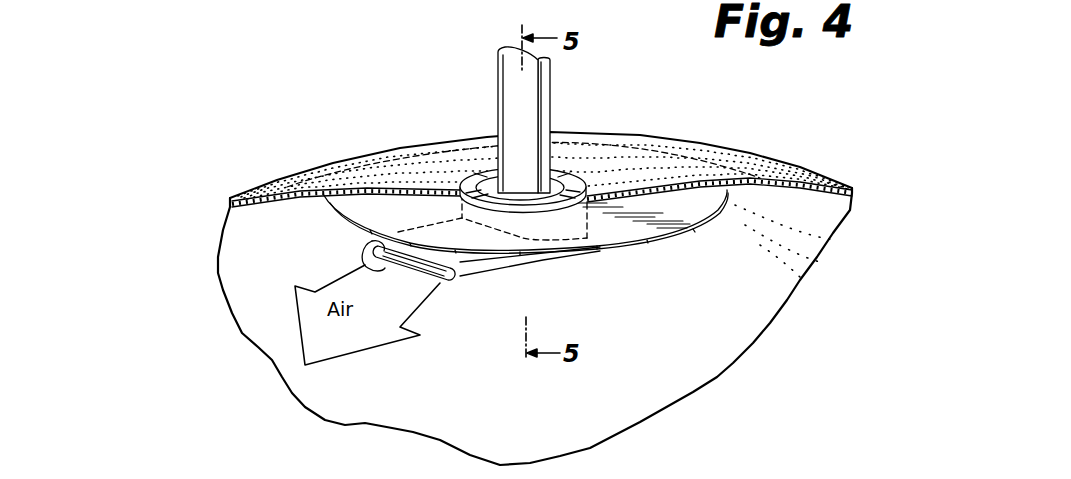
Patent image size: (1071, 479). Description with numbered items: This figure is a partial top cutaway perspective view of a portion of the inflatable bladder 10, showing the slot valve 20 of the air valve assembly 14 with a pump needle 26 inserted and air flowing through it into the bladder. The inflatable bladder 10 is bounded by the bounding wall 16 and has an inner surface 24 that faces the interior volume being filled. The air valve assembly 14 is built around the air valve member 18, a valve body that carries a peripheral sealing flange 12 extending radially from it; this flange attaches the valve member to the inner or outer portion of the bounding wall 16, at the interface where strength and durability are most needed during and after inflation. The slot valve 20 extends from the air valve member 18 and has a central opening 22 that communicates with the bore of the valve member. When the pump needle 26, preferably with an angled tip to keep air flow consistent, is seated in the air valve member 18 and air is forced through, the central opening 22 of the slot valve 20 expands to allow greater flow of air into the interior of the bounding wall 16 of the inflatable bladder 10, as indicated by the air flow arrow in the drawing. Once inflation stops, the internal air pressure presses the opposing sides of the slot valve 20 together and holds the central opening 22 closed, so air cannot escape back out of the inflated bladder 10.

The inflatable bladder 10 is at (782, 153).
The peripheral sealing flange 12 is at (653, 220).
The air valve assembly 14 is at (550, 188).
The bounding wall 16 is at (288, 176).
The air valve member 18 is at (577, 225).
The slot valve 20 is at (473, 270).
The central opening 22 is at (362, 257).
The inner surface 24 is at (460, 410).
The pump needle 26 is at (503, 100).